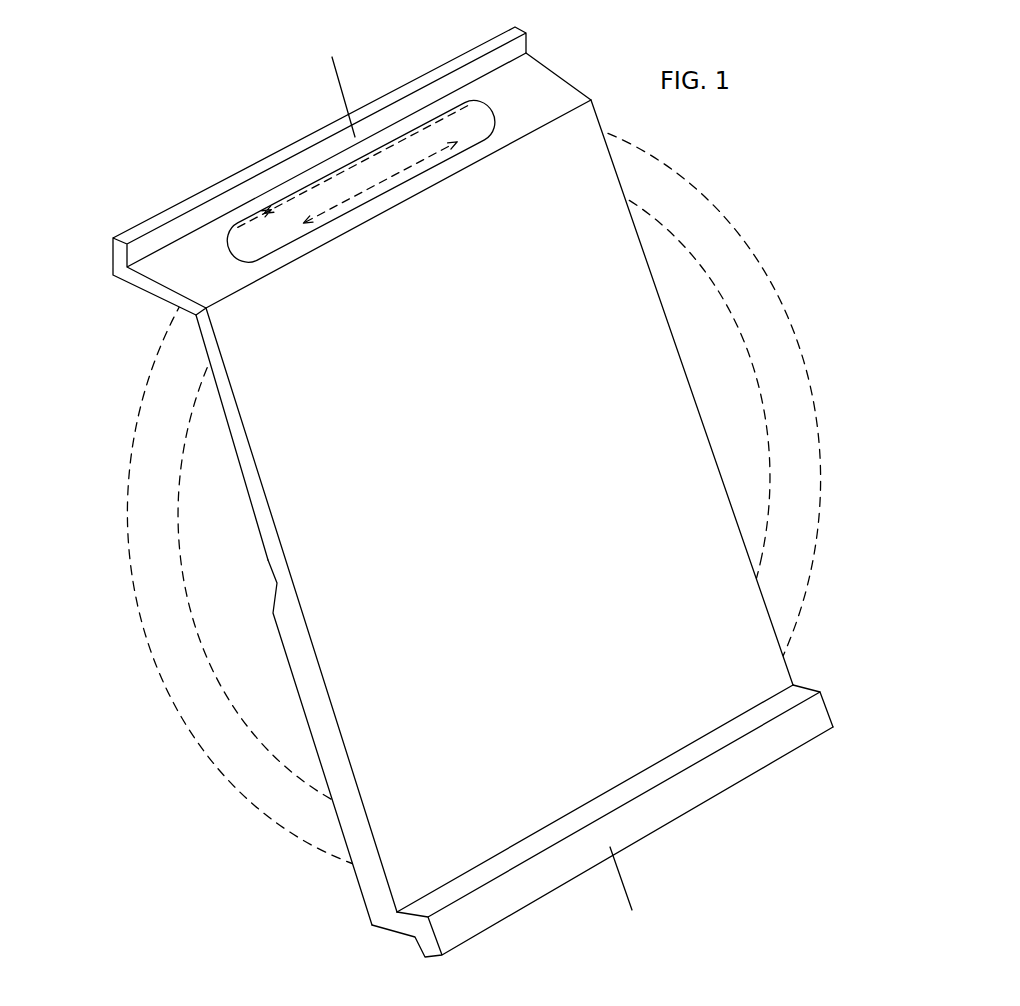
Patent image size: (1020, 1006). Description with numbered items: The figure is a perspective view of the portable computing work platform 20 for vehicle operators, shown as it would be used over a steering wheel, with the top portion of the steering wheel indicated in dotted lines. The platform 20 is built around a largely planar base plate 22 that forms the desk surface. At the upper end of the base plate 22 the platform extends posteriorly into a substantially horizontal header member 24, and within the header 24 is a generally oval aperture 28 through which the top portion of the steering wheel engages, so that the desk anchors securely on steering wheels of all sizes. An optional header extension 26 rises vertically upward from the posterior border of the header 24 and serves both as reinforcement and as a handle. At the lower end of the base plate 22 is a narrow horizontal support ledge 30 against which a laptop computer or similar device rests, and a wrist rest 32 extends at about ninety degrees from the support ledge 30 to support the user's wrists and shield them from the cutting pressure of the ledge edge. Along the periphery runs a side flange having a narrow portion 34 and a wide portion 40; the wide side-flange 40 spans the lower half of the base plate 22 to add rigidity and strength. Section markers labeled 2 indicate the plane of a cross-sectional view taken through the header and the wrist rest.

The portable computing work platform 20 is at (664, 245).
The base plate 22 is at (587, 388).
The header member 24 is at (543, 102).
The header extension 26 is at (113, 247).
The oval aperture 28 is at (355, 205).
The support ledge 30 is at (790, 698).
The wrist rest 32 is at (742, 755).
The narrow portion of side flange 34 is at (245, 453).
The wide portion of side flange 40 is at (322, 727).
The section line 2- 2 is at (373, 73).